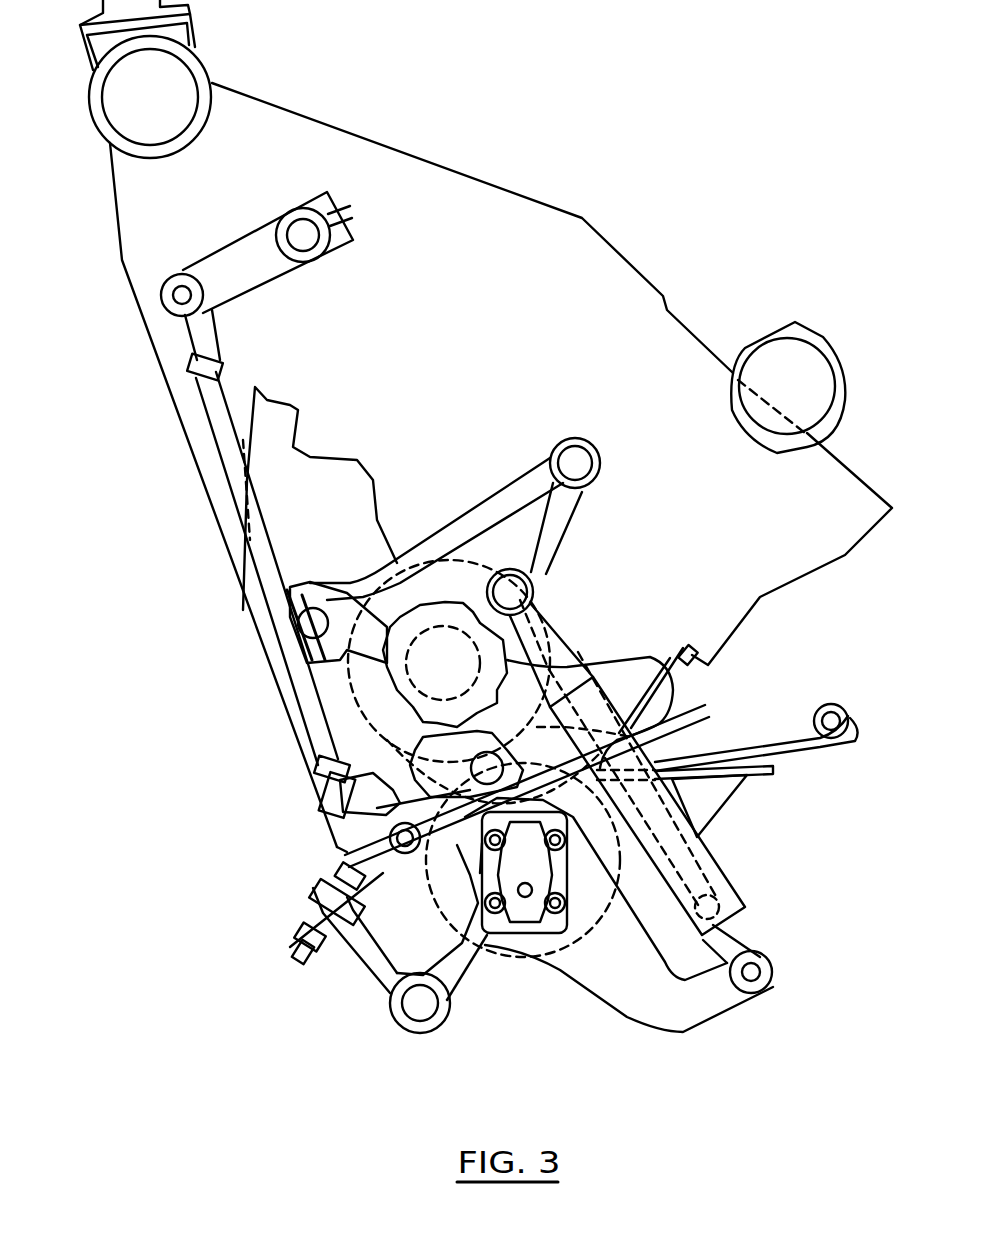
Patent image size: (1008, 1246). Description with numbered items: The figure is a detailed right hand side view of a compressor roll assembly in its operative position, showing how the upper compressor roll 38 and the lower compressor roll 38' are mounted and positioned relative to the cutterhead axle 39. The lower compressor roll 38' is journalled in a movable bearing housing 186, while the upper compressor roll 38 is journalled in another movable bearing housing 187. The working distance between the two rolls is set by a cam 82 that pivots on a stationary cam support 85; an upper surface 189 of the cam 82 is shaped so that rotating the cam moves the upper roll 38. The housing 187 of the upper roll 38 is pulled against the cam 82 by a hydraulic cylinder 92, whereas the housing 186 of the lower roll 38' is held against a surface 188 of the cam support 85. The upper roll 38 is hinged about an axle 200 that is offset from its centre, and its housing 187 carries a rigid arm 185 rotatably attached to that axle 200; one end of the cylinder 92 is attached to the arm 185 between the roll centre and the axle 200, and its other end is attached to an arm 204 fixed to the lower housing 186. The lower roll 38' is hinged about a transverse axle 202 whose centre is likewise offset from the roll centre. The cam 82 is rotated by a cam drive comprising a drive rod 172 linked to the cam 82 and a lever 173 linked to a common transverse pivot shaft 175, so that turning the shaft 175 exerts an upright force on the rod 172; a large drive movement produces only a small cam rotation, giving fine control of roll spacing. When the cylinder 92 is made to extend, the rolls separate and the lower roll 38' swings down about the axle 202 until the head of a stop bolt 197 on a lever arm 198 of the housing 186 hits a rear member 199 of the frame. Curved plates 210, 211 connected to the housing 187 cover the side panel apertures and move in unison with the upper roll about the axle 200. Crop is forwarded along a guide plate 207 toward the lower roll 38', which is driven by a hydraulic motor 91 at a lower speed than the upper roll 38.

The upper compressor roll 38 is at (486, 423).
The lower compressor roll 38' is at (328, 948).
The cutterhead axle 39 is at (798, 382).
The cam 82 is at (423, 787).
The cam support 85 is at (470, 808).
The hydraulic motor 91 is at (567, 875).
The hydraulic cylinder 92 is at (633, 758).
The drive rod 172 is at (210, 423).
The lever 173 is at (227, 250).
The transverse pivot shaft 175 is at (310, 242).
The arm 185 is at (515, 483).
The bearing housing 186 is at (528, 927).
The bearing housing 187 is at (430, 667).
The surface 188 is at (340, 850).
The upper surface 189 is at (417, 755).
The stop bolt 197 is at (303, 870).
The lever arm 198 is at (367, 977).
The rear member 199 is at (347, 852).
The axle 200 is at (575, 465).
The transverse axle 202 is at (420, 1013).
The arm 204 is at (648, 1012).
The guide plate 207 is at (777, 743).
The curved plate 210 is at (342, 468).
The curved plate 211 is at (647, 667).